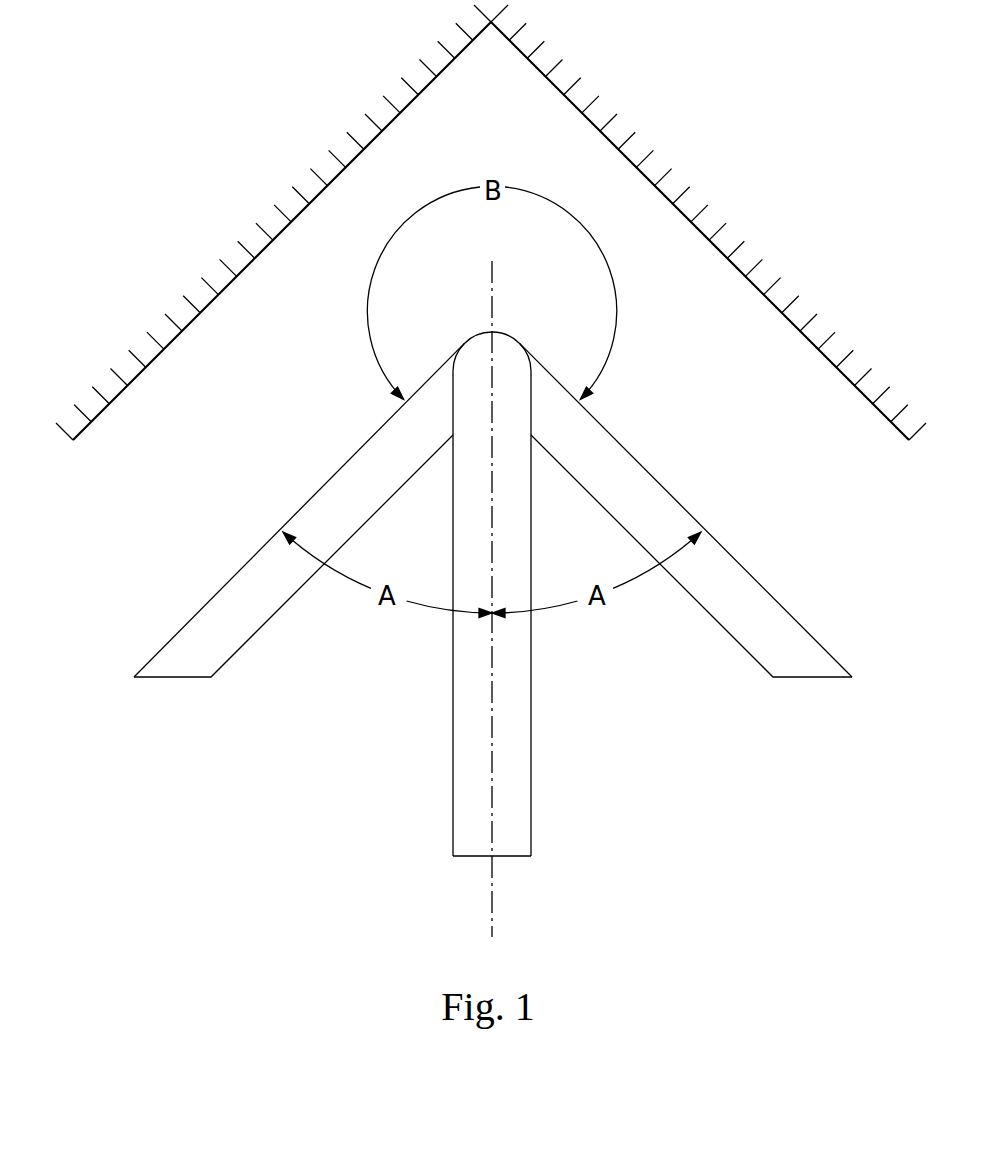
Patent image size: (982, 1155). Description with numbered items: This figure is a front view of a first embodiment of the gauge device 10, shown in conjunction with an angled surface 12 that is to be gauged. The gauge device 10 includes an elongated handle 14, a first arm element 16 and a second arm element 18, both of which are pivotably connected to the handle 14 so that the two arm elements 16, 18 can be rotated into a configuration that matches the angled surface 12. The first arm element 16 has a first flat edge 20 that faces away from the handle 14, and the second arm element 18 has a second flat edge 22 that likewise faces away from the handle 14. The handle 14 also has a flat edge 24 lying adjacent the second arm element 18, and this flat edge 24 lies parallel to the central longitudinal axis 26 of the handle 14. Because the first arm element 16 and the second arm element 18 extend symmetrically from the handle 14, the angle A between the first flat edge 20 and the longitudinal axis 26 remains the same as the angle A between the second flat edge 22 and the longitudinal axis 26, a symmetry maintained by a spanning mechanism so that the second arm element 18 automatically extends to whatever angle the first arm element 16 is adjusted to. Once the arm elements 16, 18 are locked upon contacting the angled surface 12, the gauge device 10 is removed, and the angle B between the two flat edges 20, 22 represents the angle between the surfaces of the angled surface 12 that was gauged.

The gauge device 10 is at (493, 570).
The angled surface 12 is at (595, 130).
The handle 14 is at (497, 570).
The first arm element 16 is at (299, 518).
The second arm element 18 is at (686, 534).
The first flat edge 20 is at (300, 508).
The second flat edge 22 is at (687, 510).
The flat edge 24 is at (532, 723).
The central longitudinal axis 26 is at (493, 293).